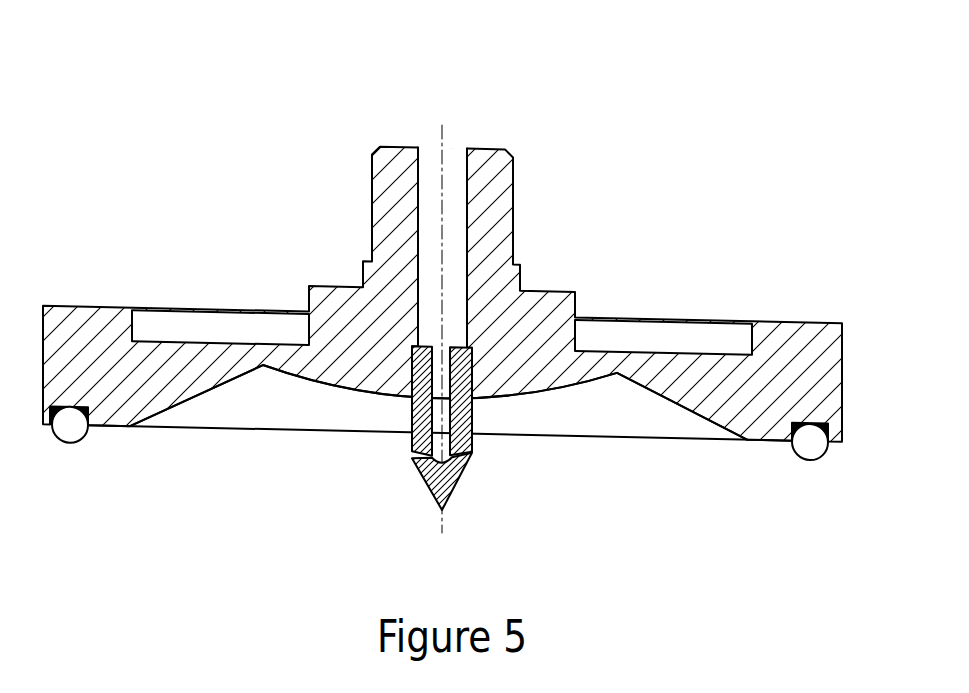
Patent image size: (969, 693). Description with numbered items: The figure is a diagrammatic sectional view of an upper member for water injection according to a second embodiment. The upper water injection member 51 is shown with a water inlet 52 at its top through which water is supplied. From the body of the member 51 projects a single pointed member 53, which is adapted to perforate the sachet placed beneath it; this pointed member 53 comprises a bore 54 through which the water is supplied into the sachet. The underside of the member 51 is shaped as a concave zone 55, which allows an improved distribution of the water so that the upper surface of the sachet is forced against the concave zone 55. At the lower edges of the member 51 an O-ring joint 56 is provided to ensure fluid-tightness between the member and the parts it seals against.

The upper water injection member 51 is at (824, 380).
The water inlet 52 is at (422, 178).
The pointed member 53 is at (425, 489).
The bore 54 is at (473, 452).
The concave zone 55 is at (587, 383).
The O-ring joint 56 is at (70, 428).